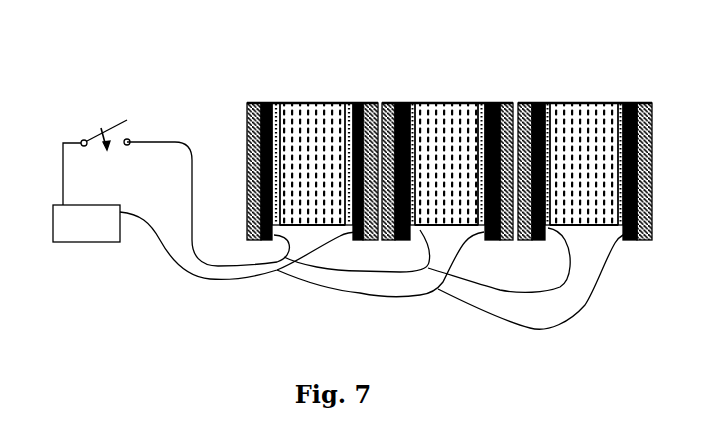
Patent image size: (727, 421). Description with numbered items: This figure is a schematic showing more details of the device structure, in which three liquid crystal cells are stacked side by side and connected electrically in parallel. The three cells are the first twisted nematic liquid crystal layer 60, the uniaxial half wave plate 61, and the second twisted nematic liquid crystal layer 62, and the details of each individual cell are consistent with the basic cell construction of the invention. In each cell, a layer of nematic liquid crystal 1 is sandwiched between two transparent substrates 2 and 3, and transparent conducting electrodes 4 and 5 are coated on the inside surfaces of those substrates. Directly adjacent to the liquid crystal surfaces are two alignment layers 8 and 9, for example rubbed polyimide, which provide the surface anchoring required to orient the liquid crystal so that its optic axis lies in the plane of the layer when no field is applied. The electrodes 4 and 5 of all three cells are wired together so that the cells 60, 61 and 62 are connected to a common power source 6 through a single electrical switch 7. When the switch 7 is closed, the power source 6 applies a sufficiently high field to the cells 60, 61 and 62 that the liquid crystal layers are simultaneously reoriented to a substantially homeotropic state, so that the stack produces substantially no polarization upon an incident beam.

The layer of nematic liquid crystal 1 is at (308, 127).
The transparent substrate 2 is at (248, 103).
The transparent substrate 3 is at (368, 103).
The transparent conducting electrode 4 is at (262, 103).
The transparent conducting electrode 5 is at (358, 103).
The power source 6 is at (80, 247).
The electrical switch 7 is at (93, 128).
The alignment layer 8 is at (275, 103).
The alignment layer 9 is at (348, 103).
The first twisted nematic liquid crystal layer 60 is at (306, 60).
The uniaxial half wave plate 61 is at (449, 58).
The second twisted nematic liquid crystal layer 62 is at (589, 60).